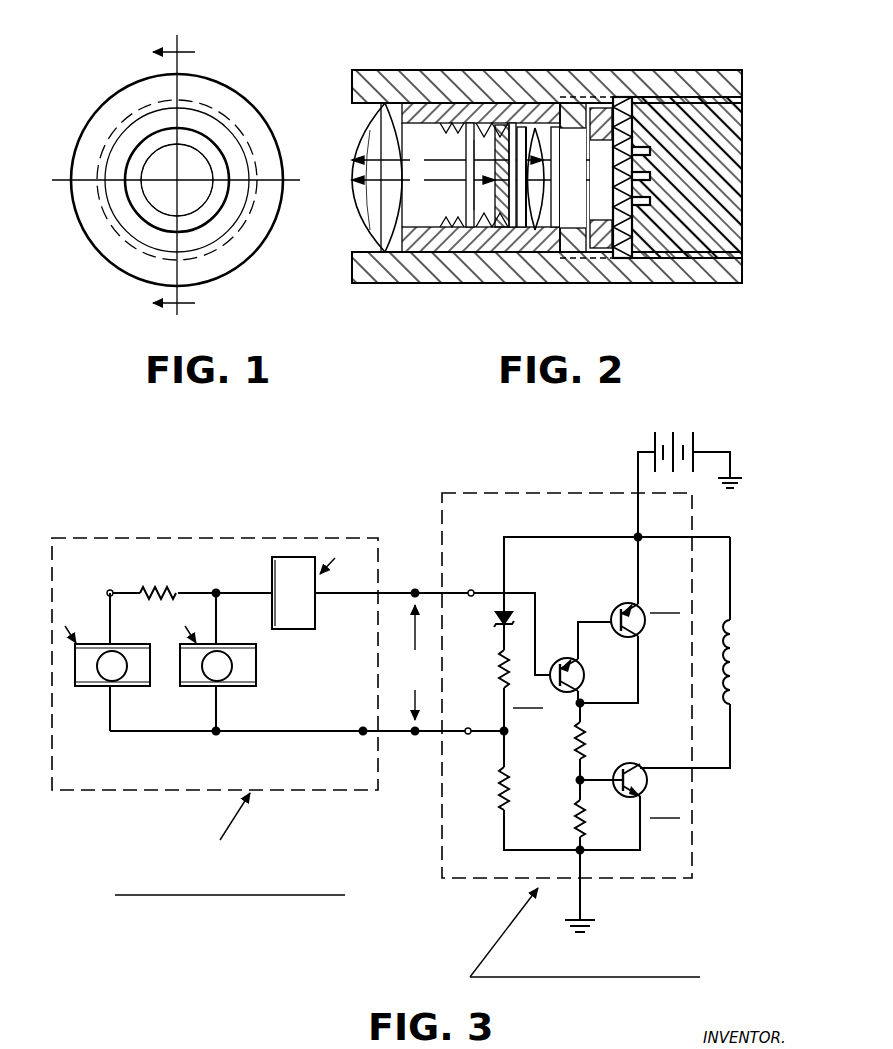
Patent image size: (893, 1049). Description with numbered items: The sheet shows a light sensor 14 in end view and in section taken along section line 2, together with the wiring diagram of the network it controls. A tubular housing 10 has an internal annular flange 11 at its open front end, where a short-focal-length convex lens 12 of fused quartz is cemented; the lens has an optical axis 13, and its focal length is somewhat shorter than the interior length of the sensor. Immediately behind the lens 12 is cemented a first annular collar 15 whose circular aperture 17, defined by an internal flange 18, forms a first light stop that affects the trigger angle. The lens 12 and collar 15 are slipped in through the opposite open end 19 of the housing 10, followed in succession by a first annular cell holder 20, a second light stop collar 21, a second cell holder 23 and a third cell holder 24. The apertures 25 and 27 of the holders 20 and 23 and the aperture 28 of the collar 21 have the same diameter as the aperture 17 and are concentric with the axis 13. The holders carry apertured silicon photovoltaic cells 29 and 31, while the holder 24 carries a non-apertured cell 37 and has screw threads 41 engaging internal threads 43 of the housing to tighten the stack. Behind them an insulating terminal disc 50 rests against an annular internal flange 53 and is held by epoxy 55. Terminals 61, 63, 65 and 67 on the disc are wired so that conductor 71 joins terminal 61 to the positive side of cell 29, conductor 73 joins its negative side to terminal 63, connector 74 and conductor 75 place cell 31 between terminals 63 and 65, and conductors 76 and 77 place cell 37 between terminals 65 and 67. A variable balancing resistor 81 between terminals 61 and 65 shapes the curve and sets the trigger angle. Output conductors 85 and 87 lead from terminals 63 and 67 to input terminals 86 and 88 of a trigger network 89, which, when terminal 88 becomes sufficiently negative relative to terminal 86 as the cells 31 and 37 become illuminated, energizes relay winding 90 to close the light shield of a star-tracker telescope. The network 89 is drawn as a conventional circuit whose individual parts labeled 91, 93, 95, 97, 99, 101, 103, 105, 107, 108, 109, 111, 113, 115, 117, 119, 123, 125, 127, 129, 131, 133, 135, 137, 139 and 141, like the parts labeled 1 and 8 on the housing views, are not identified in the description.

In FIG. 1, the outer ring of housing 1 is at (263, 245).
In FIG. 1, the section line 2 is at (181, 178).
In FIG. 2, the rear housing portion 8 is at (625, 258).
In FIG. 1, the tubular housing 10 is at (113, 97).
In FIG. 2, the tubular housing 10 is at (516, 70).
In FIG. 1, the internal annular flange 11 is at (227, 115).
In FIG. 2, the internal annular flange 11 is at (365, 110).
In FIG. 1, the circular convex lens 12 is at (198, 228).
In FIG. 2, the circular convex lens 12 is at (385, 252).
In FIG. 2, the optical axis 13 is at (352, 181).
In FIG. 2, the light sensor 14 is at (413, 58).
In FIG. 3, the light sensor 14 is at (198, 532).
In FIG. 2, the first annular collar 15 is at (430, 240).
In FIG. 1, the circular aperture 17 is at (150, 163).
In FIG. 2, the circular aperture 17 is at (470, 200).
In FIG. 1, the internal flange 18 is at (130, 168).
In FIG. 2, the internal flange 18 is at (452, 132).
In FIG. 2, the opposite open end 19 is at (742, 142).
In FIG. 2, the first annular cell holder 20 is at (470, 118).
In FIG. 2, the second light stop 21 is at (503, 252).
In FIG. 2, the second circular cell holder 23 is at (543, 122).
In FIG. 2, the third annular cell holder 24 is at (570, 258).
In FIG. 2, the circular aperture 25 is at (474, 188).
In FIG. 2, the circular aperture 27 is at (540, 179).
In FIG. 2, the circular aperture 28 is at (543, 192).
In FIG. 2, the silicon photovoltaic cell 29 is at (486, 122).
In FIG. 3, the silicon photovoltaic cell 29 is at (118, 686).
In FIG. 2, the silicon photovoltaic cell 31 is at (527, 122).
In FIG. 3, the silicon photovoltaic cell 31 is at (256, 666).
In FIG. 2, the non-apertured silicon photovoltaic cell 37 is at (565, 115).
In FIG. 3, the non-apertured silicon photovoltaic cell 37 is at (305, 593).
In FIG. 2, the screw threads 41 is at (576, 245).
In FIG. 2, the internal screw threads 43 is at (578, 260).
In FIG. 2, the terminal plate 50 is at (648, 76).
In FIG. 2, the annular internal flange 53 is at (615, 98).
In FIG. 2, the epoxy material 55 is at (715, 118).
In FIG. 2, the electrical terminal 61 is at (652, 201).
In FIG. 3, the electrical terminal 61 is at (108, 590).
In FIG. 3, the electrical terminal 63 is at (218, 734).
In FIG. 3, the electrical terminal 65 is at (216, 589).
In FIG. 3, the electrical terminal 67 is at (413, 588).
In FIG. 3, the electrical conductor 71 is at (110, 614).
In FIG. 3, the electrical conductor 73 is at (148, 733).
In FIG. 3, the electrical connector 74 is at (218, 714).
In FIG. 3, the electrical conductor 75 is at (218, 623).
In FIG. 3, the electrical conductor 76 is at (237, 592).
In FIG. 3, the electrical conductor 77 is at (342, 596).
In FIG. 3, the variable balancing resistor 81 is at (160, 586).
In FIG. 3, the output conductor 85 is at (312, 733).
In FIG. 3, the input terminal 86 is at (468, 735).
In FIG. 3, the output conductor 87 is at (448, 593).
In FIG. 3, the input terminal 88 is at (473, 590).
In FIG. 3, the trigger network 89 is at (502, 493).
In FIG. 3, the relay winding 90 is at (742, 640).
In FIG. 3, the PNP transistor 91 is at (586, 672).
In FIG. 3, the emitter 93 is at (645, 634).
In FIG. 3, the lead 95 is at (520, 592).
In FIG. 3, the PNP transistor 97 is at (593, 619).
In FIG. 3, the collector lead 99 is at (639, 686).
In FIG. 3, the lead 101 is at (639, 582).
In FIG. 3, the battery 103 is at (678, 432).
In FIG. 3, the ground 105 is at (720, 450).
In FIG. 3, the resistor 107 is at (572, 742).
In FIG. 3, the junction 108 is at (578, 783).
In FIG. 3, the resistor 109 is at (572, 825).
In FIG. 3, the ground lead 111 is at (578, 858).
In FIG. 3, the base lead 113 is at (598, 778).
In FIG. 3, the NPN transistor 115 is at (637, 762).
In FIG. 3, the emitter lead 117 is at (618, 850).
In FIG. 3, the lead 119 is at (710, 770).
In FIG. 3, the lead 123 is at (732, 580).
In FIG. 3, the supply lead 125 is at (533, 537).
In FIG. 3, the zener diode 127 is at (496, 619).
In FIG. 3, the diode cathode 129 is at (516, 619).
In FIG. 3, the lead 131 is at (500, 632).
In FIG. 3, the resistor 133 is at (500, 672).
In FIG. 3, the lead 135 is at (508, 720).
In FIG. 3, the resistor 137 is at (500, 790).
In FIG. 3, the lead 139 is at (504, 825).
In FIG. 3, the junction 141 is at (500, 725).